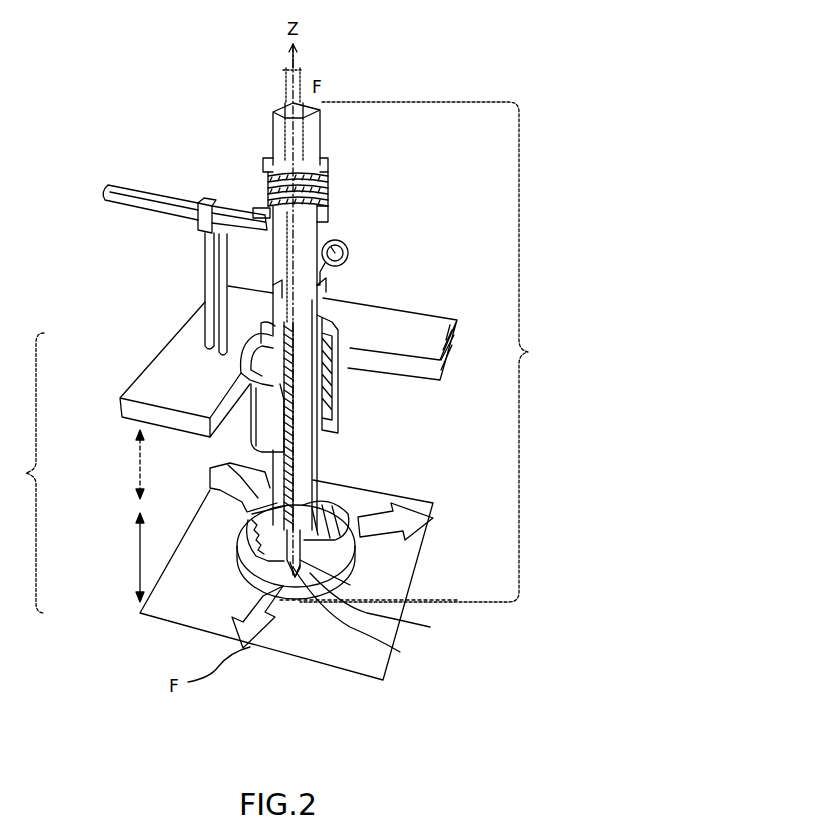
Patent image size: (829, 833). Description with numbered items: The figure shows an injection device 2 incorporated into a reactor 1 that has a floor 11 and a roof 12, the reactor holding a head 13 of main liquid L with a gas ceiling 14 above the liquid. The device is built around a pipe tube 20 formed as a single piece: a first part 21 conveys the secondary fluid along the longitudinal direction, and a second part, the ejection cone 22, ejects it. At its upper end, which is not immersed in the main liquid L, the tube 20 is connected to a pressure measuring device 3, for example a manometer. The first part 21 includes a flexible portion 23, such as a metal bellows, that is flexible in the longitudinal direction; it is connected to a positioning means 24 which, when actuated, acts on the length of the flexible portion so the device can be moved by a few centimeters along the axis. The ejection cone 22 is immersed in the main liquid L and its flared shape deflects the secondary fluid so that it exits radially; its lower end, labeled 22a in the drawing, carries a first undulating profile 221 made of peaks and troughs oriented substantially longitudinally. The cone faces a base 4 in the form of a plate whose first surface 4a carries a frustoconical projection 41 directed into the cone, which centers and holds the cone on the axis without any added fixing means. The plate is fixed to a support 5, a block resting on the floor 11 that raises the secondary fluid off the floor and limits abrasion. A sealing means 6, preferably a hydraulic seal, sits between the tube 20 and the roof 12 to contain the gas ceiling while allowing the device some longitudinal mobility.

The reactor 1 is at (28, 473).
The injection device 2 is at (424, 352).
The pressure measuring device 3 is at (348, 249).
The base 4 is at (358, 555).
The first surface 4a is at (330, 592).
The support 5 is at (318, 567).
The sealing means 6 is at (345, 395).
The floor 11 is at (146, 612).
The roof 12 is at (140, 375).
The head of main liquid 13 is at (138, 553).
The gas ceiling 14 is at (137, 447).
The pipe tube 20 is at (320, 137).
The first part 21 is at (322, 290).
The ejection cone 22 is at (345, 490).
The pressing tip 22a is at (297, 578).
The flexible portion 23 is at (321, 188).
The positioning means 24 is at (139, 185).
The projection 41 is at (352, 583).
The first undulating profile 221 is at (360, 512).
The main liquid L is at (350, 432).